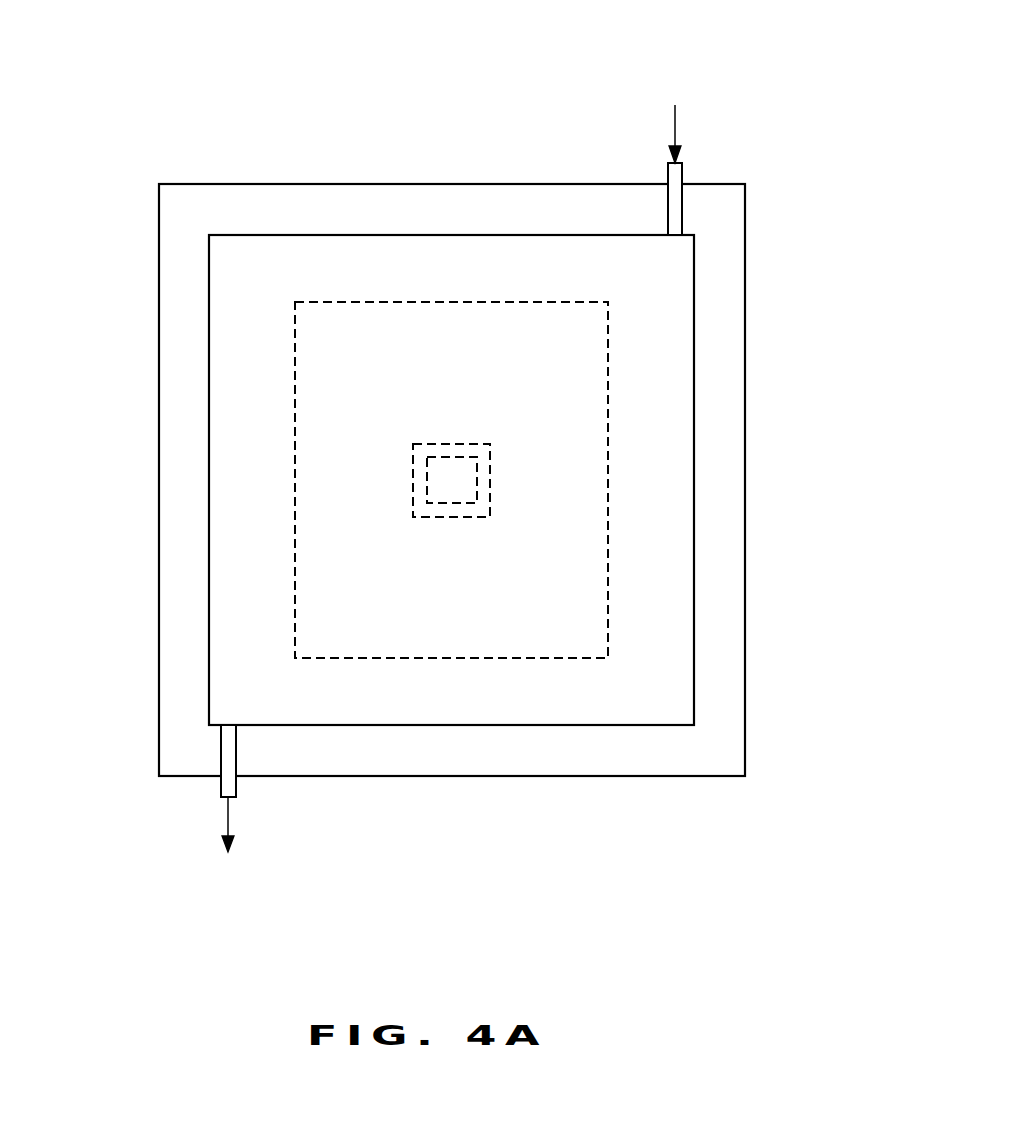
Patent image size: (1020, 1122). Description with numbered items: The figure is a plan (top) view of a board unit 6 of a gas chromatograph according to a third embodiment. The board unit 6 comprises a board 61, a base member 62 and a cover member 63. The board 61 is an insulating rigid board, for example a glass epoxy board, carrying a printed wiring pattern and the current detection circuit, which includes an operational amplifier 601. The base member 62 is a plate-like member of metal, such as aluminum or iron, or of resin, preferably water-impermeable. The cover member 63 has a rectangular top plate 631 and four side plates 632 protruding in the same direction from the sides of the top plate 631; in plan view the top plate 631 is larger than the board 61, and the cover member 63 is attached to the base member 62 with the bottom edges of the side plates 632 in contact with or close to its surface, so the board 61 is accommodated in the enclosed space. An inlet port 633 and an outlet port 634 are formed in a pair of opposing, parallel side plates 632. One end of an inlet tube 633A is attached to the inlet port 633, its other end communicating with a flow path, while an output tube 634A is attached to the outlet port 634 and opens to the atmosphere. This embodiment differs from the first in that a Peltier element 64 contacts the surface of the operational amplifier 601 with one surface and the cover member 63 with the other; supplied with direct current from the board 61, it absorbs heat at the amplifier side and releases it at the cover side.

The board unit 6 is at (475, 461).
The board 61 is at (370, 658).
The base member 62 is at (527, 777).
The cover member 63 is at (206, 465).
The top plate 631 is at (636, 717).
The side plate 632 is at (443, 852).
The inlet port 633 is at (788, 170).
The inlet tube 633A is at (683, 178).
The outlet port 634 is at (139, 788).
The output tube 634A is at (221, 778).
The Peltier element 64 is at (466, 458).
The operational amplifier 601 is at (413, 485).